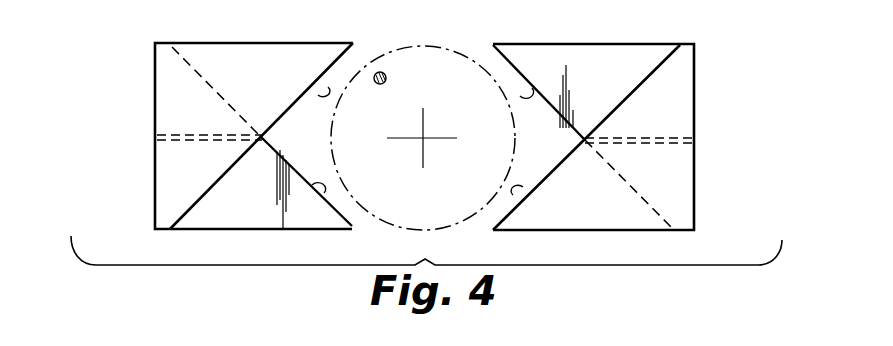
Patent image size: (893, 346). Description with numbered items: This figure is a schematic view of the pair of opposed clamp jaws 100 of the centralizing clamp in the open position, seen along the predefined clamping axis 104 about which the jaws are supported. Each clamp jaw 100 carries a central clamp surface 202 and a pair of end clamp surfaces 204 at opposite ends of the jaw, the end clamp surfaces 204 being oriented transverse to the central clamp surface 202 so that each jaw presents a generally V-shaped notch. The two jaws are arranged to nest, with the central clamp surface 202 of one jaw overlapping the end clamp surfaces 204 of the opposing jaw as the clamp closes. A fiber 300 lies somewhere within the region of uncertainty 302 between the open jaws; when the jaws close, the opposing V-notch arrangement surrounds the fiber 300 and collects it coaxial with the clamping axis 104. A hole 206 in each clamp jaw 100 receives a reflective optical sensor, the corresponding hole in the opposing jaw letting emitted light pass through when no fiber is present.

The clamp jaw 100 is at (155, 186).
The clamping axis 104 is at (425, 140).
The central clamp surface 202 is at (322, 184).
The end clamp surface 204 is at (328, 87).
The hole 206 is at (181, 134).
The fiber 300 is at (386, 72).
The region of uncertainty 302 is at (473, 33).